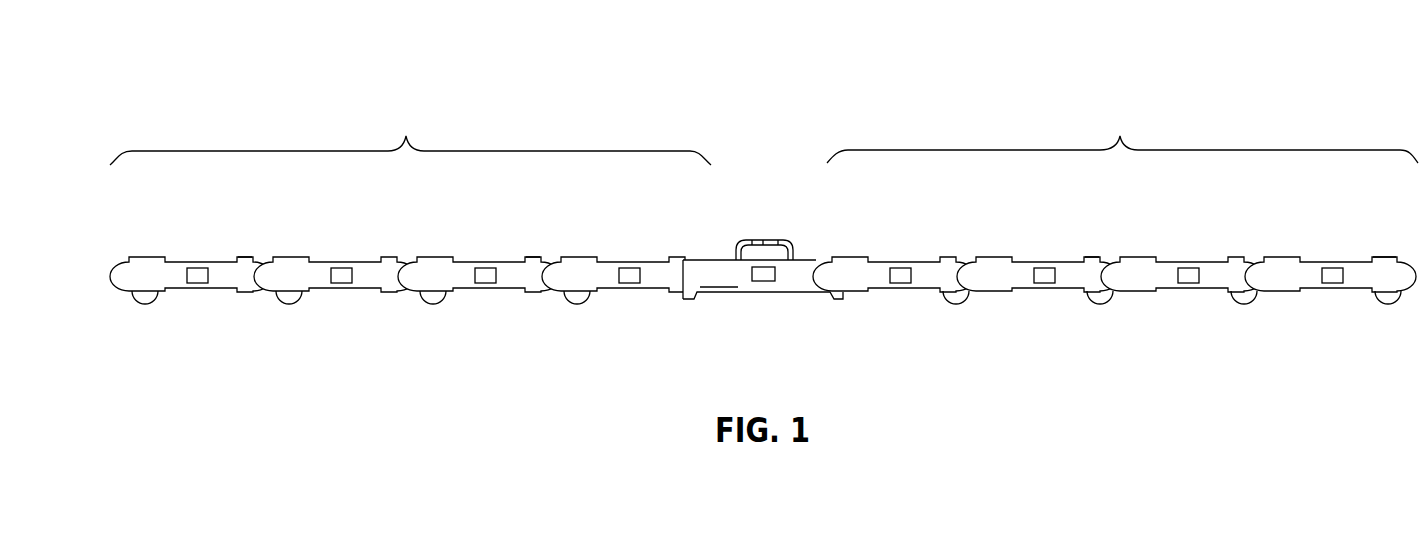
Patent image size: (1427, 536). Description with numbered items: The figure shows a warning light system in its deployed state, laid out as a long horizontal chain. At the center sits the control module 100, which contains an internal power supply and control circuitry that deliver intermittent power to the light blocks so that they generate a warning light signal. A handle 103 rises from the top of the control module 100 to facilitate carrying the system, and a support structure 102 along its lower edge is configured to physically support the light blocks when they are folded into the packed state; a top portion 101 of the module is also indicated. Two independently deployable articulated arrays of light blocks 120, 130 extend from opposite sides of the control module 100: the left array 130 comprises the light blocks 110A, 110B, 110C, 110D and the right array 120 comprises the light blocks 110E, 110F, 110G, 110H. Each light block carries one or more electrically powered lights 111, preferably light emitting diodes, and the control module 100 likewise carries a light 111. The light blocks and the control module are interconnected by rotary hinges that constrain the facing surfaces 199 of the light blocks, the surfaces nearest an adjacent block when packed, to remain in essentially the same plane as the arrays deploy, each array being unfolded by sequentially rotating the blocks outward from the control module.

The control module 100 is at (763, 279).
The housing top cover 101 is at (716, 259).
The support structure 102 is at (713, 300).
The handle 103 is at (786, 246).
The light block 110A is at (193, 292).
The light block 110B is at (337, 292).
The light block 110C is at (481, 292).
The light block 110D is at (625, 292).
The light block 110E is at (893, 292).
The light block 110F is at (1037, 292).
The light block 110G is at (1181, 292).
The light block 110H is at (1325, 292).
The electrically powered light 111 is at (762, 284).
The articulated array of light blocks 120 is at (1120, 136).
The articulated array of light blocks 130 is at (406, 136).
The facing surface 199 is at (236, 274).